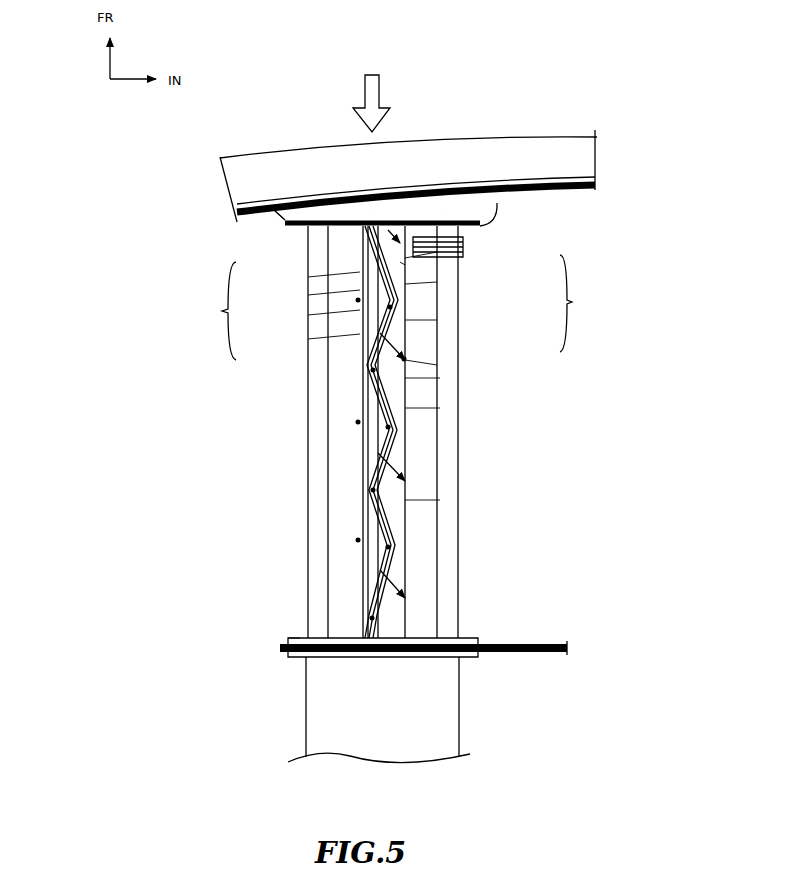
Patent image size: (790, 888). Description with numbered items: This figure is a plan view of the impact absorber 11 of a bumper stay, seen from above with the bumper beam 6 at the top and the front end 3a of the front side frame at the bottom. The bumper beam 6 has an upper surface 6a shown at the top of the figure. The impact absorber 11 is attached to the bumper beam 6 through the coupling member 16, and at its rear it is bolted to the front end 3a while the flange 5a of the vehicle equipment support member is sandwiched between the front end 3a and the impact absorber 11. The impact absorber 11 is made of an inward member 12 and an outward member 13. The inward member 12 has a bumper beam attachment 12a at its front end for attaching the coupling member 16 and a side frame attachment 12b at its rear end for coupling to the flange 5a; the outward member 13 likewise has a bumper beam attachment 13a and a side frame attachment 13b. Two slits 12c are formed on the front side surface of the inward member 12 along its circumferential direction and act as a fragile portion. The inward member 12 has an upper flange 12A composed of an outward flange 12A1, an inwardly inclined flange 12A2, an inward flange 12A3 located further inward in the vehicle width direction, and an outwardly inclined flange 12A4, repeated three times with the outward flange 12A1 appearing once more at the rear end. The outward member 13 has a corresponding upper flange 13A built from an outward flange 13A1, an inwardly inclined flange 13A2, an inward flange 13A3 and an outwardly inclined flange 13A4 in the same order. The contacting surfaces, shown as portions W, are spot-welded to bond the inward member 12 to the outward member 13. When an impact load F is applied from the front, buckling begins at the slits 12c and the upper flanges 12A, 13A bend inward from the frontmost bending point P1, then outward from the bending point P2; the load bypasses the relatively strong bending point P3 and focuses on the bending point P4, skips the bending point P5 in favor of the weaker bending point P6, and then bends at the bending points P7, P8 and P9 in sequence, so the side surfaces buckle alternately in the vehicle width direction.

The impact load F is at (377, 103).
The bumper beam 6 is at (409, 177).
The roof rail upper surface 6a is at (470, 146).
The coupling member 16 is at (478, 207).
The impact absorber 11 is at (417, 430).
The inward member 12 is at (462, 475).
The bumper beam attachment 12a is at (463, 234).
The side frame attachment 12b is at (470, 636).
The slits 12c is at (466, 246).
The upper flange 12A is at (581, 303).
The outward flange 12A1 is at (438, 250).
The inwardly inclined flange 12A2 is at (440, 282).
The inward flange 12A3 is at (440, 320).
The outwardly inclined flange 12A4 is at (440, 366).
The outward member 13 is at (305, 563).
The bumper beam attachment 13a is at (298, 224).
The side frame attachment 13b is at (300, 637).
The upper flange 13A is at (213, 311).
The outward flange 13A1 is at (405, 262).
The inwardly inclined flange 13A2 is at (400, 285).
The inward flange 13A3 is at (400, 305).
The outwardly inclined flange 13A4 is at (400, 328).
The portions W is at (362, 244).
The bending point P1 is at (357, 298).
The bending point P2 is at (392, 306).
The bending point P3 is at (405, 357).
The bending point P4 is at (371, 369).
The bending point P5 is at (390, 425).
The bending point P6 is at (358, 425).
The bending point P7 is at (371, 488).
The bending point P8 is at (358, 543).
The bending point P9 is at (375, 618).
The flange 5a is at (540, 644).
The front end 3a is at (290, 656).